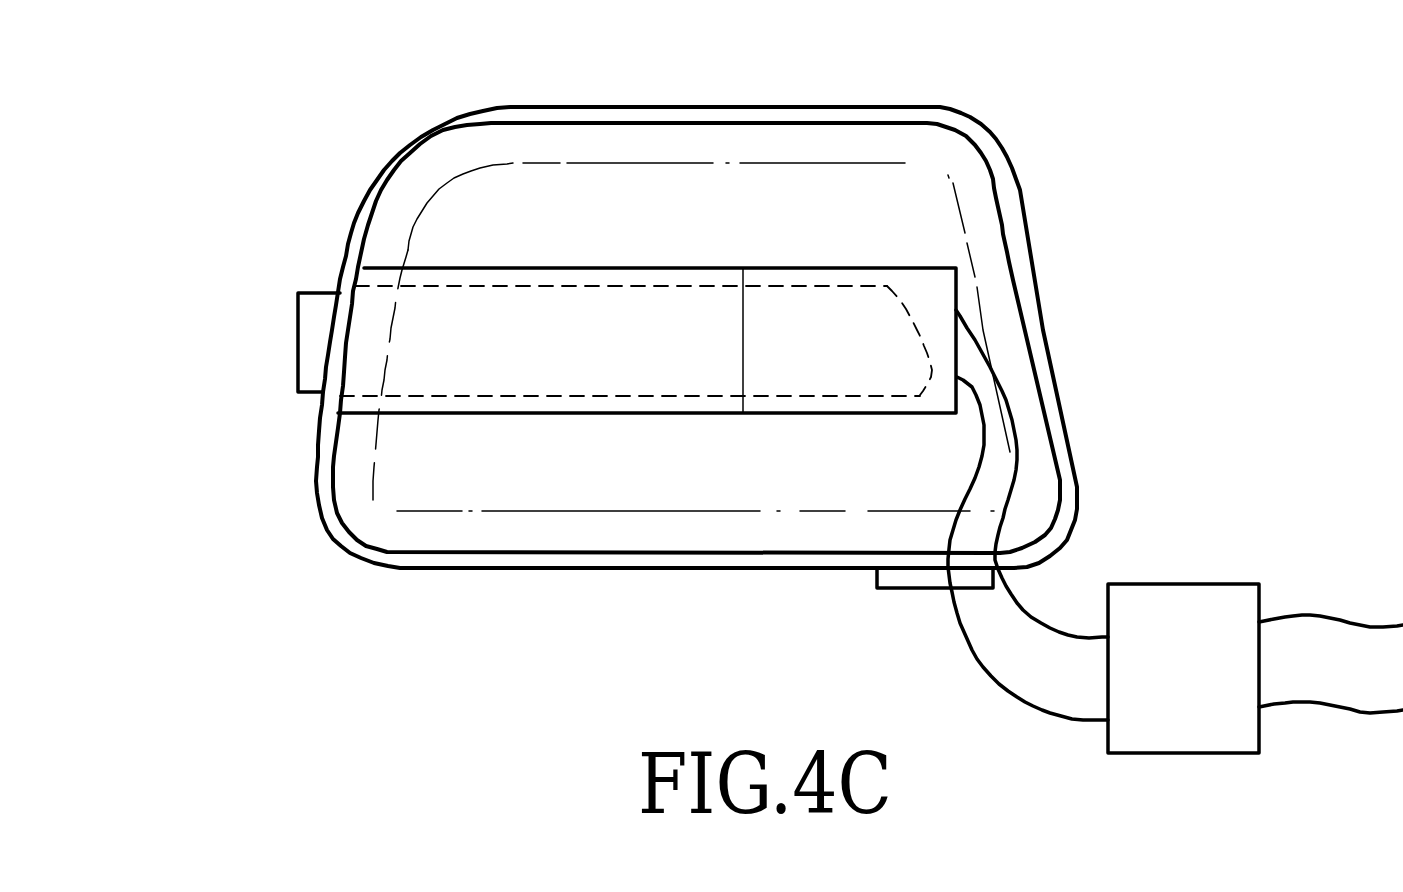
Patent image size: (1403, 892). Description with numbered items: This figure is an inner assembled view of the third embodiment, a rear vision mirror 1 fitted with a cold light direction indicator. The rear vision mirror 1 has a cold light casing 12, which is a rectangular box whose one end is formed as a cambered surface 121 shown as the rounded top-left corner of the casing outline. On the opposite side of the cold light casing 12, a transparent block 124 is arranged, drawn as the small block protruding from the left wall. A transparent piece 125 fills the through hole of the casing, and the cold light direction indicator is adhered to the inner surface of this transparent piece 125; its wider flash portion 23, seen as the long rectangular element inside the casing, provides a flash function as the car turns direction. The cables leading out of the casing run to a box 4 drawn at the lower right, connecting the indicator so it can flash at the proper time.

The rear vision mirror 1 is at (635, 360).
The cold light casing 12 is at (990, 132).
The cambered surface 121 is at (565, 107).
The transparent block 124 is at (298, 340).
The flash portion 23 is at (612, 382).
The transparent piece 125 is at (935, 415).
The external unit 4 is at (1232, 675).